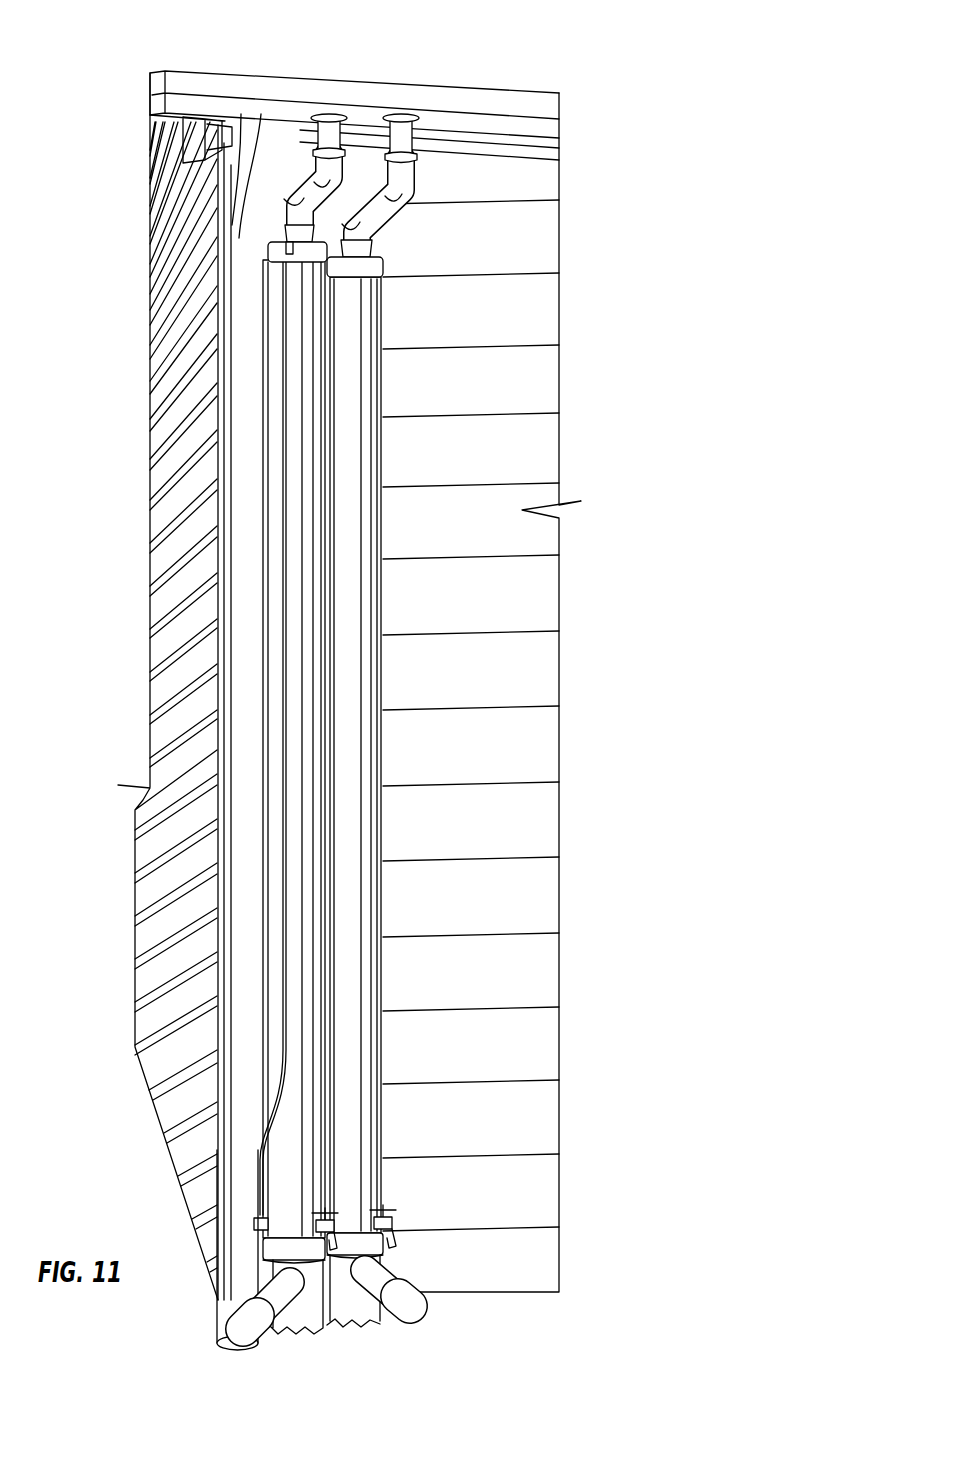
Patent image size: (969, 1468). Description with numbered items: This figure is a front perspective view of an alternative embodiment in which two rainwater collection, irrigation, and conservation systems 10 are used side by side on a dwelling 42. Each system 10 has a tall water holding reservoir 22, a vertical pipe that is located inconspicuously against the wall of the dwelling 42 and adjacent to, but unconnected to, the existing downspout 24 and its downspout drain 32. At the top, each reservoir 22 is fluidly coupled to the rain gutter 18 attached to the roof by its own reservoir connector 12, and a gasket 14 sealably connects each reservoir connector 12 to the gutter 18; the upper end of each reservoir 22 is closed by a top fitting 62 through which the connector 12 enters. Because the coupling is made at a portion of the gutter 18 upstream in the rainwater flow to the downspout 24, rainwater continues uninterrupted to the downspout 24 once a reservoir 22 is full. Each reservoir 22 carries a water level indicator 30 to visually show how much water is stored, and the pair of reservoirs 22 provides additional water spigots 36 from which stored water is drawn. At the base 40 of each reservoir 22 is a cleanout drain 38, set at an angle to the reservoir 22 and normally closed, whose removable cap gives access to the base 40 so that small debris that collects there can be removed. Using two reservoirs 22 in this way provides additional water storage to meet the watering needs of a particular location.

The rainwater collection, irrigation, and conservation system 10 is at (268, 357).
The reservoir connector 12 is at (325, 167).
The gasket 14 is at (324, 113).
The rain gutter 18 is at (543, 130).
The water holding reservoir 22 is at (295, 765).
The downspout 24 is at (237, 1163).
The water level indicator 30 is at (275, 1063).
The downspout drain 32 is at (235, 1350).
The water spigot 36 is at (333, 1213).
The cleanout drain 38 is at (407, 1285).
The base 40 is at (358, 1287).
The dwelling 42 is at (530, 385).
The top cap 62 is at (300, 247).